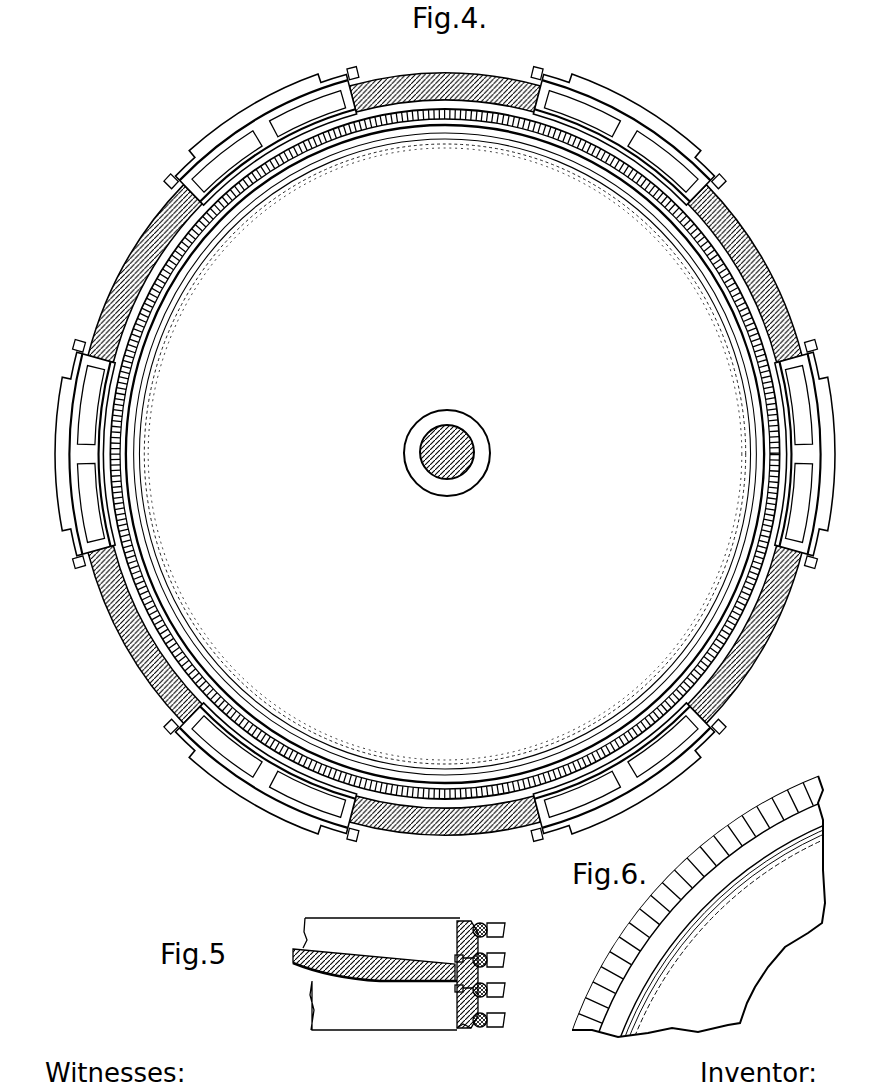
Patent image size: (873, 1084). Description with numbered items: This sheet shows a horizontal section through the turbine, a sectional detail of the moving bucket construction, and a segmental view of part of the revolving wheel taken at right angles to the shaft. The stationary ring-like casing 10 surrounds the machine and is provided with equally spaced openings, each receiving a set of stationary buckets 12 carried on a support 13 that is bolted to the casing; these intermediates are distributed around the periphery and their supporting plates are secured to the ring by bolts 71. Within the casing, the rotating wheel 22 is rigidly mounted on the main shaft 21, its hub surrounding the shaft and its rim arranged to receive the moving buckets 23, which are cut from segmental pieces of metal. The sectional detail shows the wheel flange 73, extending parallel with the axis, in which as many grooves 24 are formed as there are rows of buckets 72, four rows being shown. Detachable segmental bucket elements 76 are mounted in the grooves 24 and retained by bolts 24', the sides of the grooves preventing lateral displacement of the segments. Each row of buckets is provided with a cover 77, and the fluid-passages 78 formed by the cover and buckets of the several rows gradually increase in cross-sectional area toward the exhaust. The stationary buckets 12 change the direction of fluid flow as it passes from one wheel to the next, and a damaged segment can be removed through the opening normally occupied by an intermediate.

In FIG. 4, the casing 10 is at (770, 647).
In FIG. 4, the stationary buckets 12 is at (602, 770).
In FIG. 4, the support 13 is at (660, 782).
In FIG. 4, the main shaft 21 is at (474, 452).
In FIG. 4, the wheel 22 is at (444, 454).
In FIG. 4, the bolts 71 is at (445, 454).
In FIG. 4, the segmental bucket elements 76 is at (412, 795).
In FIG. 6, the segmental bucket elements 76 is at (625, 957).
In FIG. 6, the cover 77 is at (705, 844).
In FIG. 5, the cover 77 is at (504, 930).
In FIG. 5, the fluid-passages 78 is at (497, 938).
In FIG. 5, the rows of buckets 72 is at (502, 974).
In FIG. 6, the flange 73 is at (598, 1026).
In FIG. 5, the flange 73 is at (478, 1033).
In FIG. 5, the buckets 23 is at (522, 972).
In FIG. 5, the grooves 24 is at (450, 1051).
In FIG. 5, the bolts 24' is at (439, 953).